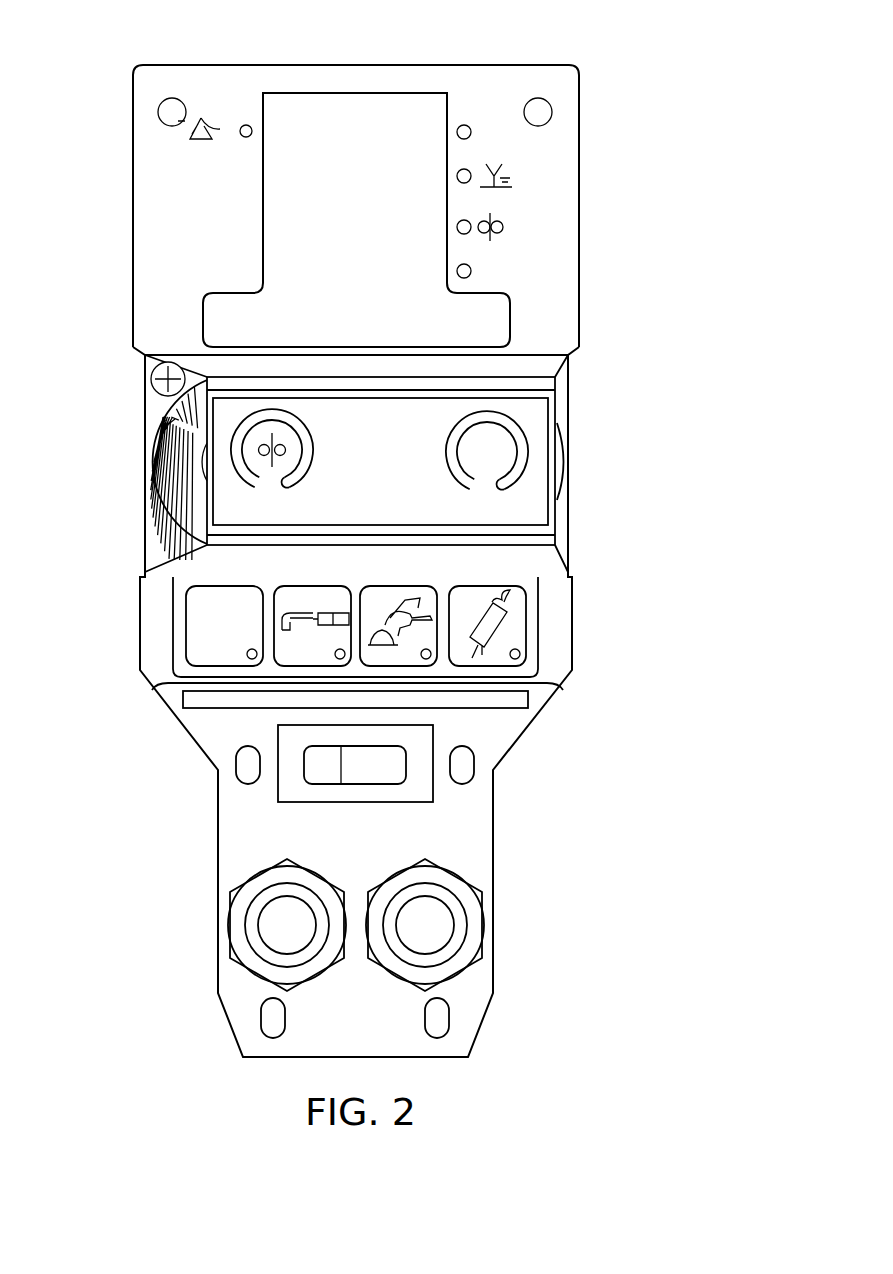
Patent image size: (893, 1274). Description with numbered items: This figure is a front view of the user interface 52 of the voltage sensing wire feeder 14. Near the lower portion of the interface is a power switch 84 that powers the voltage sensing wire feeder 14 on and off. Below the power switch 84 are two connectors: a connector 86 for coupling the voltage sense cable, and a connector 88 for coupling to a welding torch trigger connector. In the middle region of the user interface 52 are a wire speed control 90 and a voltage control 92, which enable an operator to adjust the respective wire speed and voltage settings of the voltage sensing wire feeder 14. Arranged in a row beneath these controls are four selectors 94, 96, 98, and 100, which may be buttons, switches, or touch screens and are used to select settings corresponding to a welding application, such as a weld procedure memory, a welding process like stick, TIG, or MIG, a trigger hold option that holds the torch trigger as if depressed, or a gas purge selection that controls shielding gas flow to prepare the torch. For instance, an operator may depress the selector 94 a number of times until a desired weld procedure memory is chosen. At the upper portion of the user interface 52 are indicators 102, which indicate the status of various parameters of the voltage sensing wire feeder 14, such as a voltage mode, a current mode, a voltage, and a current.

The voltage sensing wire feeder 14 is at (645, 68).
The user interface 52 is at (72, 225).
The power switch 84 is at (394, 773).
The connector 86 is at (280, 950).
The connector 88 is at (435, 950).
The wire speed control 90 is at (255, 478).
The voltage control 92 is at (505, 443).
The selector 94 is at (198, 622).
The selector 96 is at (312, 590).
The selector 98 is at (393, 597).
The selector 100 is at (508, 625).
The indicators 102 is at (543, 190).